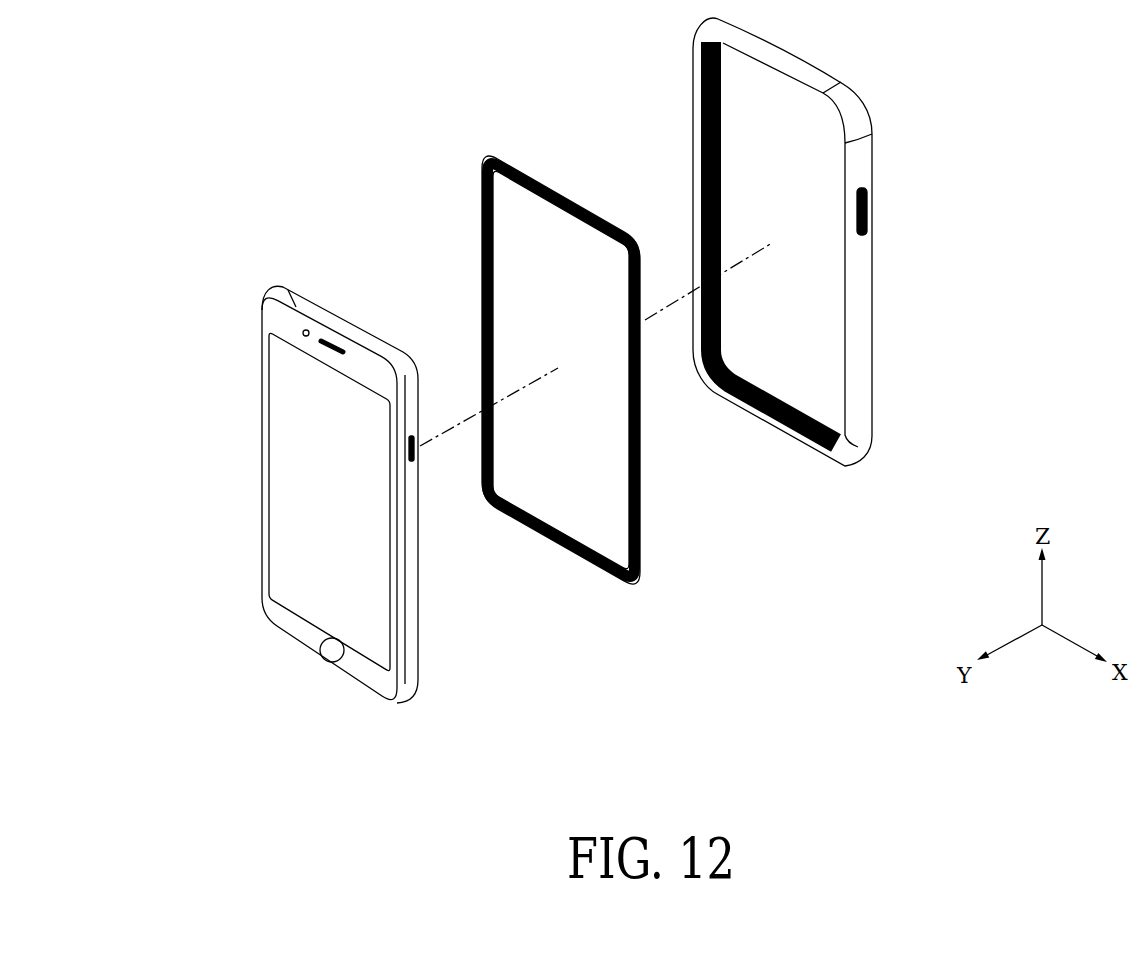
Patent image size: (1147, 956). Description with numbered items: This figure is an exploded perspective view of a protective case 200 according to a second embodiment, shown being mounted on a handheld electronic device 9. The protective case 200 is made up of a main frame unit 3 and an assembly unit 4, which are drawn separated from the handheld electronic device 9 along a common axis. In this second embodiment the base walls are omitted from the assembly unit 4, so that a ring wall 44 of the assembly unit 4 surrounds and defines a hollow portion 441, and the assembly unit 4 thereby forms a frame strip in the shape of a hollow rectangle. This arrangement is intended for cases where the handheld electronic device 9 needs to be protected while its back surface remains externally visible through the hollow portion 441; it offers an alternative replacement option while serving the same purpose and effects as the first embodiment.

The protective case 200 is at (608, 63).
The main frame unit 3 is at (681, 102).
The assembly unit 4 is at (544, 165).
The ring wall 44 is at (482, 275).
The hollow portion 441 is at (558, 508).
The handheld electronic device 9 is at (252, 465).